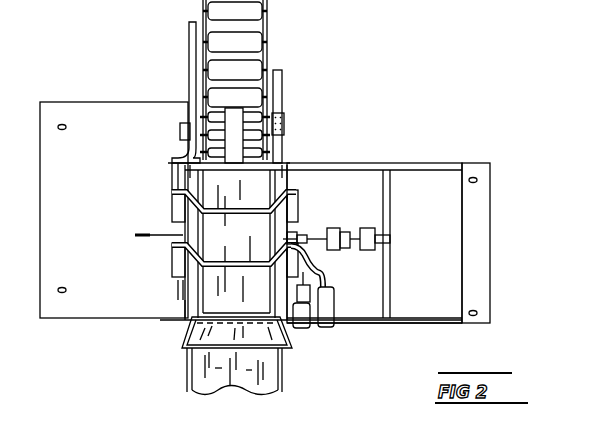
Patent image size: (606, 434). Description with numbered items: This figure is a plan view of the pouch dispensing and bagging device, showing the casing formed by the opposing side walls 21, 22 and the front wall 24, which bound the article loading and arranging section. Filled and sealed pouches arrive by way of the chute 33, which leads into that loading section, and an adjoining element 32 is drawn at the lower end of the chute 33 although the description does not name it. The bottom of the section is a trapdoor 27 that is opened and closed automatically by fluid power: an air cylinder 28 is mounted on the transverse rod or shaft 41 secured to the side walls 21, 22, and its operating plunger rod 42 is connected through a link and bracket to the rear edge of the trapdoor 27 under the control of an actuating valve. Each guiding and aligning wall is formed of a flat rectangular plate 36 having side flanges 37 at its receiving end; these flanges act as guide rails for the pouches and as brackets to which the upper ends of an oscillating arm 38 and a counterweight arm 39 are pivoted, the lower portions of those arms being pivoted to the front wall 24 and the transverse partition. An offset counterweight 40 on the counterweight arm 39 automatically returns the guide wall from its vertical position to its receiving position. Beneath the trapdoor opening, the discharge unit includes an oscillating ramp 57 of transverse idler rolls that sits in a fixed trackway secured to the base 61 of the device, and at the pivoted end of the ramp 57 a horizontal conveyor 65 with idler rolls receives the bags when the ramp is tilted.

The side wall 21 is at (355, 166).
The side wall 22 is at (366, 323).
The front wall 24 is at (183, 175).
The trapdoor 27 is at (243, 176).
The air cylinder 28 is at (352, 239).
The outlet tube segment 32 is at (196, 375).
The chute 33 is at (260, 335).
The flat rectangular plate 36 is at (230, 268).
The side flanges 37 is at (289, 197).
The oscillating arm 38 is at (175, 216).
The counterweight arm 39 is at (300, 208).
The offset counterweight 40 is at (330, 304).
The transverse rod or shaft 41 is at (388, 298).
The operating plunger rod 42 is at (315, 233).
The ramp 57 is at (252, 136).
The base 61 is at (113, 122).
The horizontal conveyor 65 is at (237, 15).